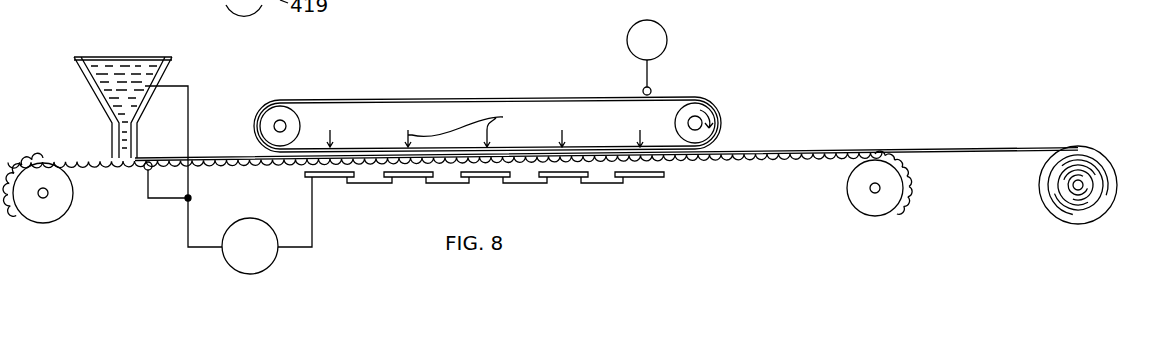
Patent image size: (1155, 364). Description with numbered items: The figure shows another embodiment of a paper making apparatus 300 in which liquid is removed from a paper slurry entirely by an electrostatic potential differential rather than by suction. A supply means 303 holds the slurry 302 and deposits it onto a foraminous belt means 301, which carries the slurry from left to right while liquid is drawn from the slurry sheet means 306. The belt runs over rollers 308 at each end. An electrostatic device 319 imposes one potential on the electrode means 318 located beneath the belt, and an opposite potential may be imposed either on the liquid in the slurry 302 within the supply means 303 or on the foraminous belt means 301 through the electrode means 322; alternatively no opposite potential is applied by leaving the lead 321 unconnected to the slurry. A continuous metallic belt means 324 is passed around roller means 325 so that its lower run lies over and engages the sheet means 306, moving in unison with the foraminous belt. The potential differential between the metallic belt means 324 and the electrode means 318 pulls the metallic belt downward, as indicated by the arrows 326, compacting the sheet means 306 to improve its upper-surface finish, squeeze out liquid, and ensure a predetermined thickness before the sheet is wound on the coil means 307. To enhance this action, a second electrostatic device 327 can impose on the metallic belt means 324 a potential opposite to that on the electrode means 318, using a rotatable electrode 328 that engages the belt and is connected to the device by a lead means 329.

The paper making apparatus 300 is at (782, 88).
The foraminous belt means 301 is at (84, 163).
The slurry 302 is at (122, 107).
The supply means 303 is at (165, 73).
The slurry sheet means 306 is at (889, 149).
The coil means 307 is at (1045, 187).
The conveyor rollers 308 is at (58, 211).
The electrode means 318 is at (337, 178).
The electrostatic device 319 is at (264, 258).
The lead 321 is at (188, 240).
The electrode means 322 is at (146, 170).
The continuous metallic belt means 324 is at (435, 100).
The roller means 325 is at (298, 125).
The arrows 326 is at (475, 121).
The electrostatic device 327 is at (660, 43).
The rotatable electrode 328 is at (652, 91).
The lead means 329 is at (650, 75).